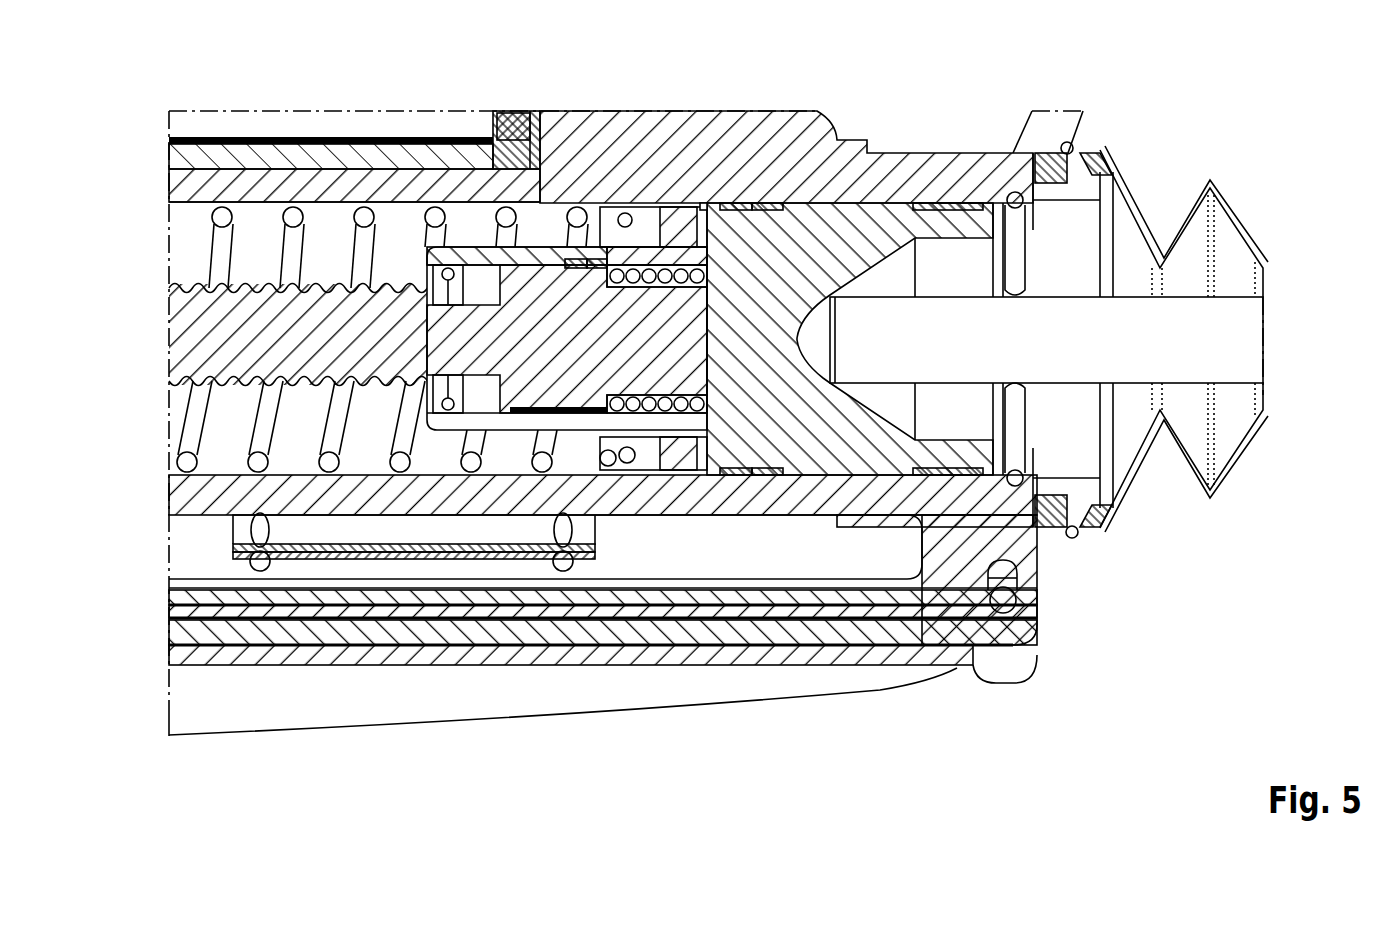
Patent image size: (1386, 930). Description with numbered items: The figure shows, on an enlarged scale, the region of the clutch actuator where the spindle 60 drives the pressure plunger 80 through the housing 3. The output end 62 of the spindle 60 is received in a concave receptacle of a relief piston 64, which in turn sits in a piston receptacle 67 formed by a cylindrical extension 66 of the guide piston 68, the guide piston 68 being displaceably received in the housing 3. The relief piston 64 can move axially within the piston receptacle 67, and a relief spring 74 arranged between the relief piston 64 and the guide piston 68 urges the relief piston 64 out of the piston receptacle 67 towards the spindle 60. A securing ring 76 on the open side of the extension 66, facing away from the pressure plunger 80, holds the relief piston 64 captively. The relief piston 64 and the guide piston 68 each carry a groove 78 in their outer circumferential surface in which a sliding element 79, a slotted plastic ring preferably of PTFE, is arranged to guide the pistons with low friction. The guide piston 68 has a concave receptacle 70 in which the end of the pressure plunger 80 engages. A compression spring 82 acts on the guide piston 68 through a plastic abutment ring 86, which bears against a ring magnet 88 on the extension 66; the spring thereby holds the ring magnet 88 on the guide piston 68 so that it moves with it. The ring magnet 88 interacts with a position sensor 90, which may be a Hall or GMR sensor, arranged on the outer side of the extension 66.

The housing 3 is at (723, 133).
The spindle 60 is at (193, 330).
The output end 62 is at (547, 338).
The relief piston 64 is at (593, 363).
The cylindrical extension 66 is at (517, 422).
The piston receptacle 67 is at (478, 412).
The guide piston 68 is at (777, 257).
The concave receptacle 70 is at (888, 257).
The relief spring 74 is at (673, 407).
The securing ring 76 is at (452, 278).
The groove 78 is at (573, 263).
The sliding element 79 is at (592, 265).
The pressure plunger 80 is at (1234, 320).
The compression spring 82 is at (193, 422).
The abutment ring 86 is at (645, 455).
The ring magnet 88 is at (673, 217).
The position sensor 90 is at (360, 553).